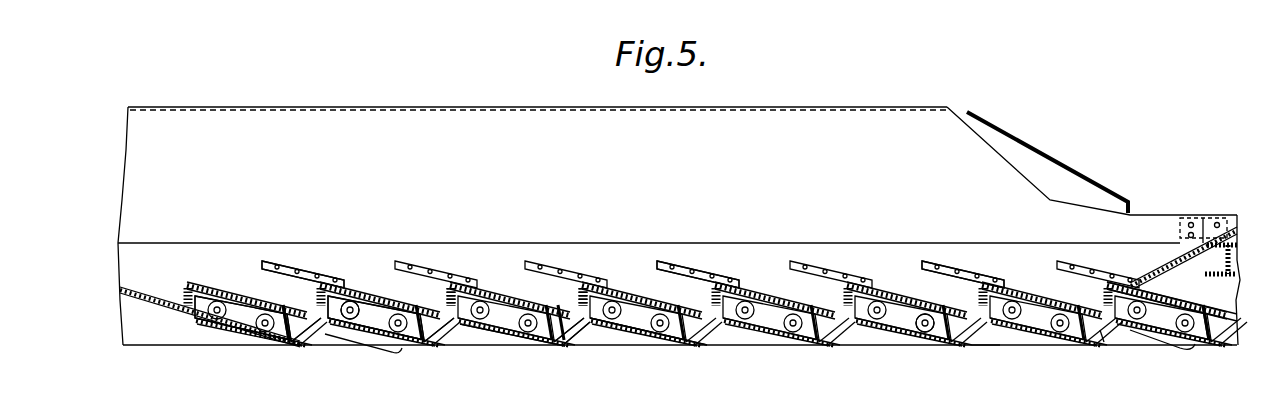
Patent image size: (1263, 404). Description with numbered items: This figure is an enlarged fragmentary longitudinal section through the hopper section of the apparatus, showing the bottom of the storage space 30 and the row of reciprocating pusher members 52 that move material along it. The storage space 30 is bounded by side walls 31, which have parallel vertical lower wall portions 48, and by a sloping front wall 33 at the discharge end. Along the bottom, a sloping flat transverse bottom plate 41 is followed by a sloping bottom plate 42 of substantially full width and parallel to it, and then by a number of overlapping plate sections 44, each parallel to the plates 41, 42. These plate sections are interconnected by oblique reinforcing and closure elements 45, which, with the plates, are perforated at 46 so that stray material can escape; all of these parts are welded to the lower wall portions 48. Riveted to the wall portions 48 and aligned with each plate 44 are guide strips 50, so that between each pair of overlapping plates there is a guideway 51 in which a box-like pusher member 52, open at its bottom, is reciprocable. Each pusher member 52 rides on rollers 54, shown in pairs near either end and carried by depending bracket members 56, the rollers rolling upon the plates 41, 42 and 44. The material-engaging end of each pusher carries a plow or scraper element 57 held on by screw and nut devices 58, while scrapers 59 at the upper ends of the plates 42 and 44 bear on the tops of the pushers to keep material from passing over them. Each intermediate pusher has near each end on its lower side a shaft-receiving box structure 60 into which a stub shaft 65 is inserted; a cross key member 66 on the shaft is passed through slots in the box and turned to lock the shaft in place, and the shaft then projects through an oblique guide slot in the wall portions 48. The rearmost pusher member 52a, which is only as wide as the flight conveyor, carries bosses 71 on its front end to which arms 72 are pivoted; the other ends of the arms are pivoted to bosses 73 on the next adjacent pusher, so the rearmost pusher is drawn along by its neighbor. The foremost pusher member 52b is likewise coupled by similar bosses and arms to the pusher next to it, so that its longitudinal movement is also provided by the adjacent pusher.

The storage space 30 is at (812, 145).
The side walls 31 is at (549, 106).
The front wall 33 is at (1166, 257).
The sloping flat transverse bottom plate 41 is at (203, 312).
The sloping bottom plate 42 is at (347, 320).
The plate sections 44 is at (490, 336).
The oblique reinforcing and closure elements 45 is at (442, 334).
The perforations 46 is at (294, 340).
The lower wall portions 48 is at (992, 334).
The guide strips 50 is at (299, 262).
The guideways 51 is at (275, 285).
The pusher members 52 is at (372, 300).
The rearward pusher member 52a is at (242, 322).
The forward pusher member 52b is at (1182, 302).
The rollers 54 is at (918, 313).
The bracket members 56 is at (513, 332).
The plow or scraper elements 57 is at (712, 298).
The screw and nut devices 58 is at (585, 286).
The scrapers 59 is at (458, 286).
The shaft-receiving box structure 60 is at (554, 342).
The stub shaft elements 65 is at (557, 312).
The cross key member 66 is at (542, 338).
The bosses 71 is at (284, 332).
The arms 72 is at (358, 348).
The bosses 73 is at (421, 342).